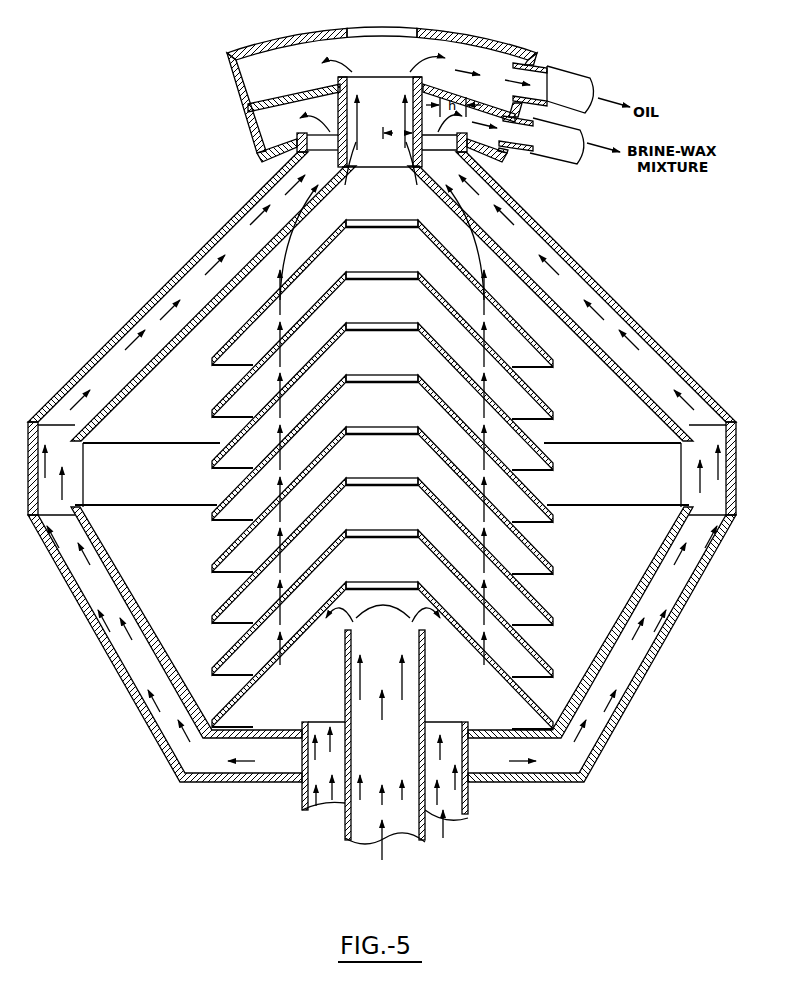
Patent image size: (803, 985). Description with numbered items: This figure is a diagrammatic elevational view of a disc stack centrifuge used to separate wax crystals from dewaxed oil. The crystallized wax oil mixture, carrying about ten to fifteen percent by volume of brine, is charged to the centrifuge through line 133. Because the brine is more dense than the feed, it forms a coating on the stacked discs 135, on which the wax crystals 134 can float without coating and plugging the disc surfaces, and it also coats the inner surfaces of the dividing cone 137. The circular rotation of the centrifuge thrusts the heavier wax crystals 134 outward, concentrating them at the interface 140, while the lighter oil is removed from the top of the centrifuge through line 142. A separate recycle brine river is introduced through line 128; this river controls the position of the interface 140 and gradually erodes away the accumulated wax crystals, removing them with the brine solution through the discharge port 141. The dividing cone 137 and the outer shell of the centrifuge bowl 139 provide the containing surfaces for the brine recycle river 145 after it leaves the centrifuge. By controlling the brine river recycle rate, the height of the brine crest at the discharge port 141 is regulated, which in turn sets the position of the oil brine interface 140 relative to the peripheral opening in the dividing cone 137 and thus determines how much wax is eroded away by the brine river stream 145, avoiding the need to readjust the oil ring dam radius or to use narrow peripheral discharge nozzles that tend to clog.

The recycle brine line 128 is at (302, 800).
The feed line 133 is at (343, 826).
The wax crystals 134 is at (168, 290).
The discs 135 is at (346, 274).
The dividing cone 137 is at (253, 250).
The outer shell of the centrifuge bowl 139 is at (75, 374).
The interface 140 is at (682, 455).
The discharge port 141 is at (427, 130).
The oil line 142 is at (568, 78).
The brine recycle river 145 is at (123, 343).